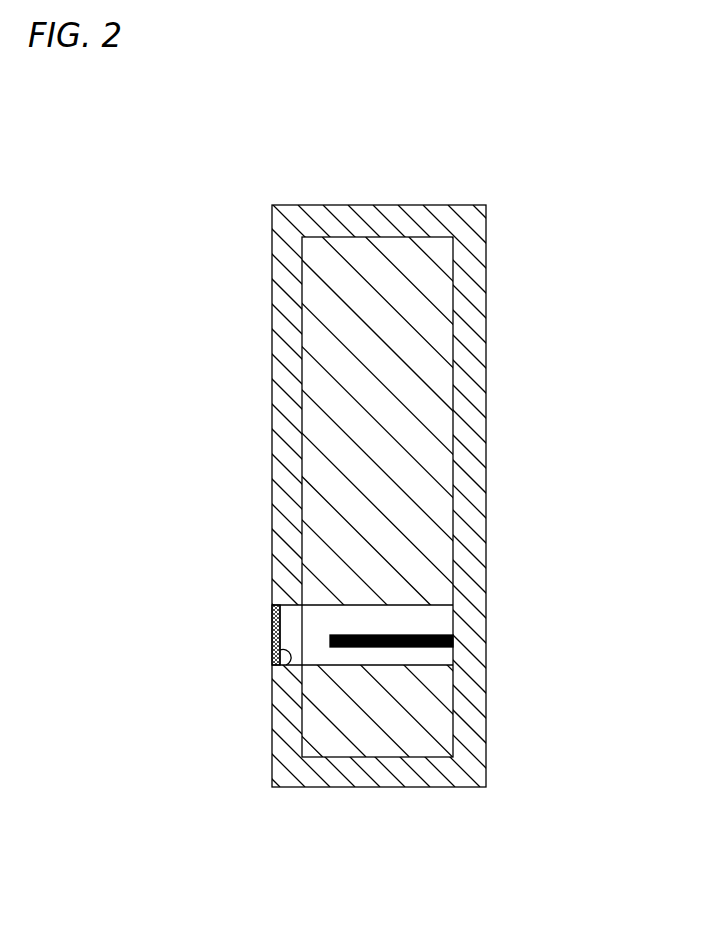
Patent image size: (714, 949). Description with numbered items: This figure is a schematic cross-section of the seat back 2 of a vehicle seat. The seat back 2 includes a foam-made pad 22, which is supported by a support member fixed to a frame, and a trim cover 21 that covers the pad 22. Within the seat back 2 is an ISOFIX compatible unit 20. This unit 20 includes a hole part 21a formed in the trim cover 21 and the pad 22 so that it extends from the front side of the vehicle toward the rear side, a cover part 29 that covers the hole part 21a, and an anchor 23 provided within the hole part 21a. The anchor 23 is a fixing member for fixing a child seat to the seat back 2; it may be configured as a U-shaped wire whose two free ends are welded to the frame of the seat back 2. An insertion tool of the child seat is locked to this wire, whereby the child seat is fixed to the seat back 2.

The seat back 2 is at (517, 182).
The ISOFIX compatible unit 20 is at (250, 637).
The trim cover 21 is at (475, 536).
The hole part 21a is at (280, 650).
The pad 22 is at (427, 412).
The anchor 23 is at (423, 636).
The cover part 29 is at (273, 612).